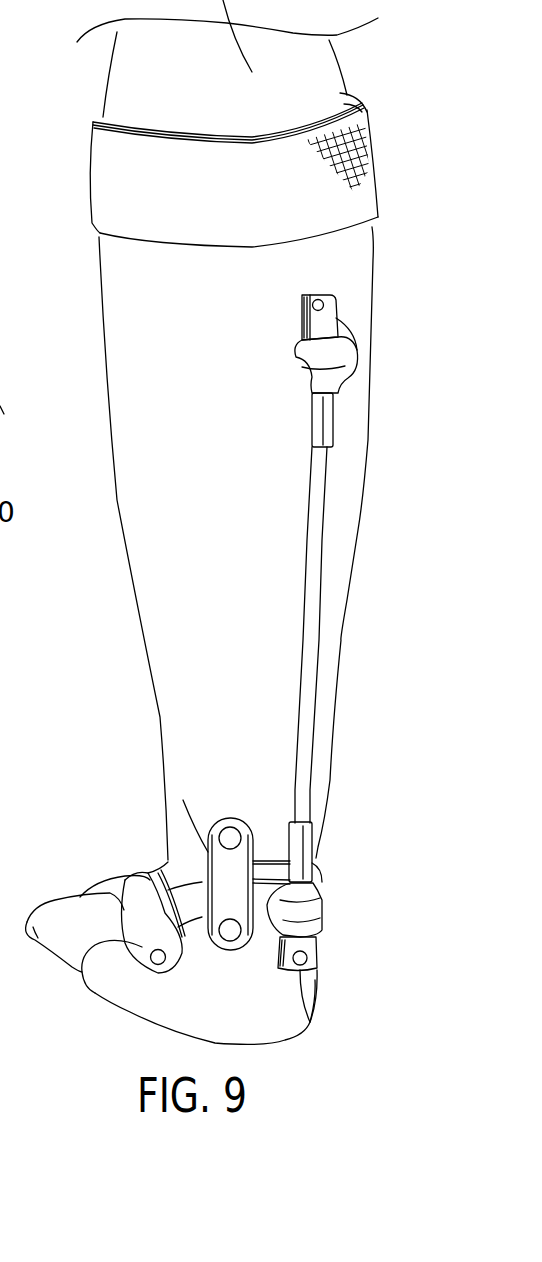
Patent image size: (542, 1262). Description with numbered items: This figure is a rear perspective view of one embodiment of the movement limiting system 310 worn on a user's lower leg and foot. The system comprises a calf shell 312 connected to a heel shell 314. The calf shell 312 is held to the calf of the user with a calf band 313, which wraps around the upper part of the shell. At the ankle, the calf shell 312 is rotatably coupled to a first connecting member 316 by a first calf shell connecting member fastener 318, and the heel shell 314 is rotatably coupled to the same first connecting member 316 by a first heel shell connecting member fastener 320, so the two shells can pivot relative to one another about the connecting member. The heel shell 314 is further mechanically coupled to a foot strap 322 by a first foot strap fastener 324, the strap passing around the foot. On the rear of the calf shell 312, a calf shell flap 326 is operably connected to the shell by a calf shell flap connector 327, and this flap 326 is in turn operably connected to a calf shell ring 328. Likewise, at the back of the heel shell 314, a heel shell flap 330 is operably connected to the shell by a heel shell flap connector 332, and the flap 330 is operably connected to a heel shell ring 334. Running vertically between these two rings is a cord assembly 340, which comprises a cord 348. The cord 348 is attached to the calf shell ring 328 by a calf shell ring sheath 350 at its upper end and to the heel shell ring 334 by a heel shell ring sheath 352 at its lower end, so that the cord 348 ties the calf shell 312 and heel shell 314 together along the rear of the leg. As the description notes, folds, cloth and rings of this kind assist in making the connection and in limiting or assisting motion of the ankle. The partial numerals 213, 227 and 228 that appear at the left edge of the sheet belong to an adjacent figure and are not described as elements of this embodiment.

The movement limiting system 310 is at (300, 1080).
The calf shell 312 is at (250, 511).
The calf band 313 is at (373, 152).
The heel shell 314 is at (148, 997).
The first connecting member 316 is at (192, 940).
The first calf shell connecting member fastener 318 is at (246, 818).
The first heel shell connecting member fastener 320 is at (232, 935).
The foot strap 322 is at (142, 890).
The first foot strap fastener 324 is at (158, 957).
The calf shell flap 326 is at (303, 317).
The calf shell flap connector 327 is at (327, 305).
The calf shell ring 328 is at (300, 358).
The heel shell flap 330 is at (316, 945).
The heel shell flap connector 332 is at (303, 973).
The heel shell ring 334 is at (325, 903).
The cord assembly 340 is at (325, 677).
The cord 348 is at (307, 548).
The calf shell ring sheath 350 is at (324, 400).
The heel shell ring sheath 352 is at (318, 880).
The partial numeral from adjacent figure 213 is at (13, 48).
The partial numeral from adjacent figure 227 is at (14, 204).
The partial numeral from adjacent figure 228 is at (15, 300).